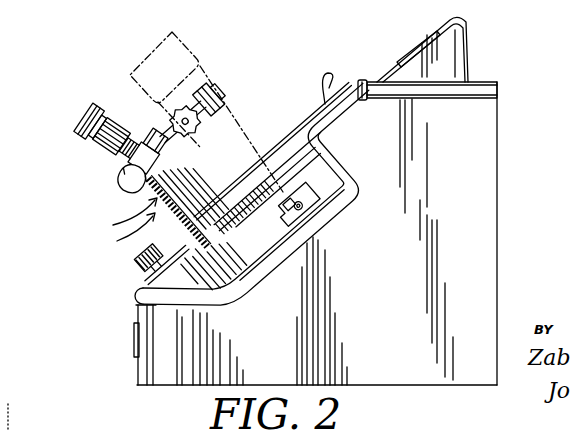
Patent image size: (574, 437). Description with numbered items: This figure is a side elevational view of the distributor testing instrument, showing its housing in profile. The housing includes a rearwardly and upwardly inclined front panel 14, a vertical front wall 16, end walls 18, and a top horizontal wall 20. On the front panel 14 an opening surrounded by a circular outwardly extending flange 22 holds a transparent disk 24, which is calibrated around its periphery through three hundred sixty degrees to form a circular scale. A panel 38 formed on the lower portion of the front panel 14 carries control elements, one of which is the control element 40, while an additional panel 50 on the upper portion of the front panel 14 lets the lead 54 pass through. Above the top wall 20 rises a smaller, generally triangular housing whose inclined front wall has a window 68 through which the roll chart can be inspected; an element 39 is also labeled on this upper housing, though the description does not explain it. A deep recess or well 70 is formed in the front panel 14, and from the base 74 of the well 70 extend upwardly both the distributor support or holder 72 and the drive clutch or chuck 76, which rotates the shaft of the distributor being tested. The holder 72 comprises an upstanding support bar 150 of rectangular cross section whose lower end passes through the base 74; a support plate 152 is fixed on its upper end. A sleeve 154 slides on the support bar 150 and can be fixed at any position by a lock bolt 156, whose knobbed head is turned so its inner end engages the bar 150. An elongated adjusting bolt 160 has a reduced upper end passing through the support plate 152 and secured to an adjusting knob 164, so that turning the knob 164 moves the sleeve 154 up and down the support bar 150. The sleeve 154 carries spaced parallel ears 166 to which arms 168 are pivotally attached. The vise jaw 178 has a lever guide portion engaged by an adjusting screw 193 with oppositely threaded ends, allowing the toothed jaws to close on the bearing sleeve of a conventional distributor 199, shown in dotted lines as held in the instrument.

The front panel 14 is at (358, 86).
The vertical front wall 16 is at (137, 372).
The end walls 18 is at (407, 268).
The top horizontal wall 20 is at (377, 81).
The circular outwardly extending flange 22 is at (292, 138).
The transparent disk 24 is at (275, 155).
The panel 38 is at (147, 282).
The bracket 39 is at (448, 25).
The control element 40 is at (148, 262).
The additional panel 50 is at (317, 118).
The lead 54 is at (324, 78).
The window 68 is at (418, 42).
The well 70 is at (325, 174).
The distributor support or holder 72 is at (126, 232).
The base of well 74 is at (280, 245).
The drive clutch or chuck 76 is at (323, 197).
The support bar 150 is at (200, 197).
The support plate 152 is at (130, 110).
The sleeve 154 is at (125, 160).
The lock bolt 156 is at (125, 183).
The adjusting bolt 160 is at (110, 147).
The adjusting knob 164 is at (97, 110).
The ears 166 is at (123, 216).
The arms 168 is at (181, 144).
The vise jaw 178 is at (215, 97).
The adjusting screw 193 is at (215, 124).
The distributor 199 is at (163, 40).